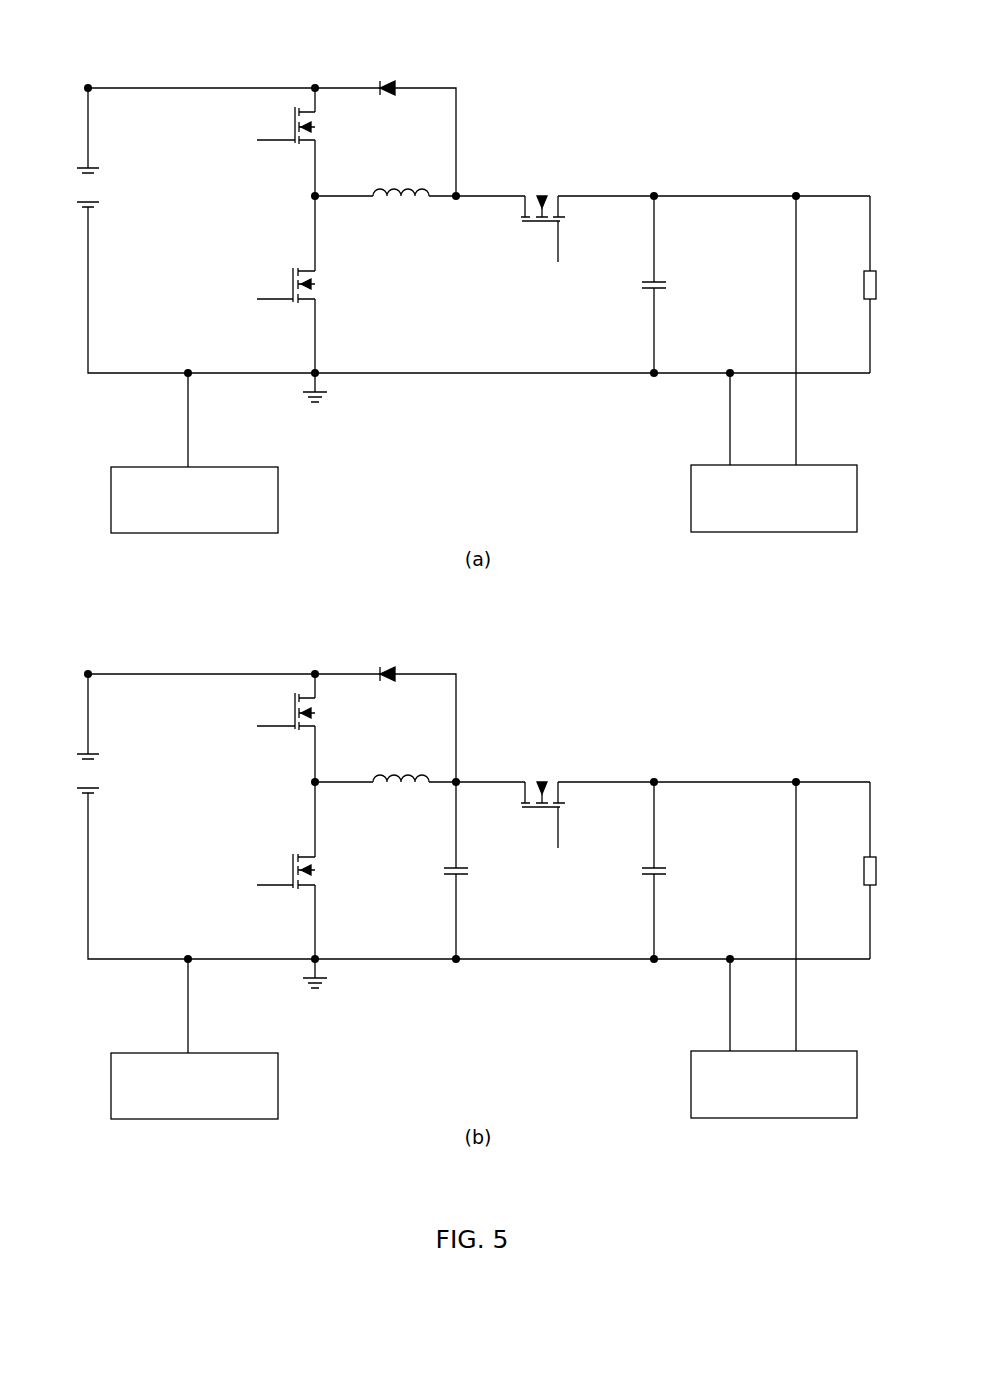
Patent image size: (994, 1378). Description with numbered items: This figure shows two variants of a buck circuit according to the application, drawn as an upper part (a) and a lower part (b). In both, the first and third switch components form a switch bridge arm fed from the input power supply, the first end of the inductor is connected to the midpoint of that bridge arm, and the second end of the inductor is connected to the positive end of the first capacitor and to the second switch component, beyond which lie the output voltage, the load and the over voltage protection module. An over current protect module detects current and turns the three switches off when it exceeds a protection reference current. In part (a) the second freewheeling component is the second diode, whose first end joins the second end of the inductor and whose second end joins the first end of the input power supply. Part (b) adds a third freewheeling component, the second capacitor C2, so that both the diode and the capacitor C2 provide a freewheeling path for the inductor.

The second capacitor C2 is at (439, 870).